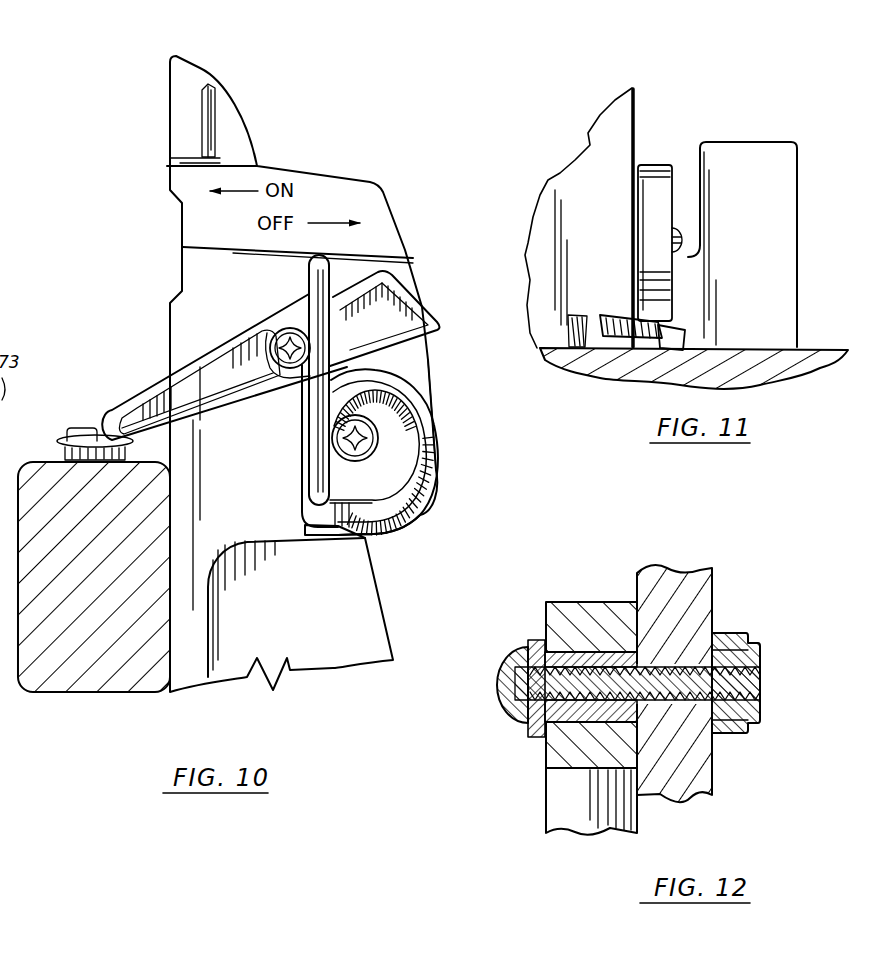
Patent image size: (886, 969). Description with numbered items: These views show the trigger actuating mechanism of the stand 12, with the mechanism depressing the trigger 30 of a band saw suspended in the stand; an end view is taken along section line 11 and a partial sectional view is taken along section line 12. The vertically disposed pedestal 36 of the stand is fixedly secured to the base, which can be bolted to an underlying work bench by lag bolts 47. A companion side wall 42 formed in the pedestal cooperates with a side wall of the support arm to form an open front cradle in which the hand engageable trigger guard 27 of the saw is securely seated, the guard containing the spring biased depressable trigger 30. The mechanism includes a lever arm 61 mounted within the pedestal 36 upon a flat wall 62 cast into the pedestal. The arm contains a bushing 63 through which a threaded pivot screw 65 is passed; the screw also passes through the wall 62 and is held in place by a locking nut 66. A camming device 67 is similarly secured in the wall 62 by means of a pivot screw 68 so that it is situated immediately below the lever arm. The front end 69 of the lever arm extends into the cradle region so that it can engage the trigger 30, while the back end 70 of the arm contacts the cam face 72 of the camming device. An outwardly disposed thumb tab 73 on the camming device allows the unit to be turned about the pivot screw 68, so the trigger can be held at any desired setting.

In FIG. 10, the section line 11— 11 is at (50, 325).
In FIG. 10, the stand 12 is at (305, 284).
In FIG. 10, the trigger guard 27 is at (73, 700).
In FIG. 11, the trigger guard 27 is at (806, 364).
In FIG. 10, the trigger 30 is at (92, 432).
In FIG. 11, the trigger 30 is at (690, 337).
In FIG. 10, the pedestal 36 is at (383, 600).
In FIG. 10, the side wall 42 is at (200, 640).
In FIG. 10, the lag bolt 47 is at (192, 118).
In FIG. 10, the lever arm 61 is at (152, 353).
In FIG. 11, the lever arm 61 is at (678, 298).
In FIG. 12, the lever arm 61 is at (594, 592).
In FIG. 10, the flat wall 62 is at (410, 366).
In FIG. 11, the flat wall 62 is at (637, 116).
In FIG. 12, the flat wall 62 is at (705, 605).
In FIG. 12, the bushing 63 is at (556, 757).
In FIG. 12, the pivot screw 65 is at (513, 718).
In FIG. 12, the locking nut 66 is at (745, 634).
In FIG. 10, the camming device 67 is at (301, 481).
In FIG. 11, the camming device 67 is at (803, 263).
In FIG. 10, the pivot screw 68 is at (376, 452).
In FIG. 10, the front end 69 is at (127, 392).
In FIG. 10, the back end 70 is at (404, 302).
In FIG. 10, the cam face 72 is at (433, 412).
In FIG. 10, the thumb tab 73 is at (350, 258).
In FIG. 11, the thumb tab 73 is at (772, 198).